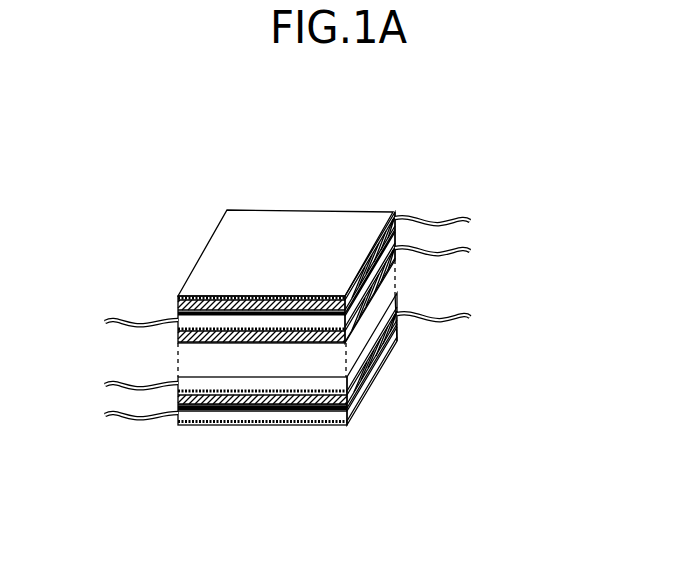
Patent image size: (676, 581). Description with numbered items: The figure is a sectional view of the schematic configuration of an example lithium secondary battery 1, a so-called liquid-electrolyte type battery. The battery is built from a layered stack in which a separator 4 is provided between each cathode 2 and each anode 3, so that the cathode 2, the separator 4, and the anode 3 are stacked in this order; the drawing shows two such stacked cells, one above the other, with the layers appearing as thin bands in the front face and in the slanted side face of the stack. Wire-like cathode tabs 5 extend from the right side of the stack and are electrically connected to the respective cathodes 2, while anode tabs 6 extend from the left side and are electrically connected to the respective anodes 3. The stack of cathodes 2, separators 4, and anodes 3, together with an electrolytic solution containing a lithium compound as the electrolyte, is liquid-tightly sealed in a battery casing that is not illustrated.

The lithium secondary battery 1 is at (241, 204).
The cathode 2 is at (177, 304).
The anode 3 is at (246, 412).
The separator 4 is at (347, 405).
The cathode tab 5 is at (470, 253).
The anode tab 6 is at (118, 318).